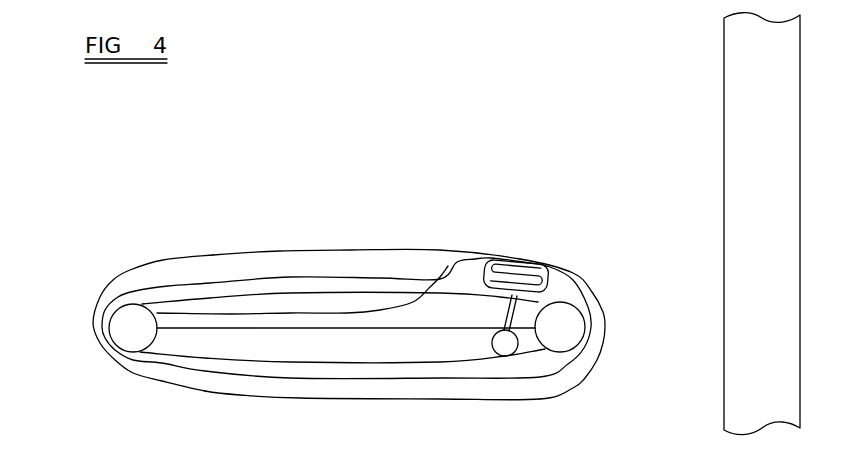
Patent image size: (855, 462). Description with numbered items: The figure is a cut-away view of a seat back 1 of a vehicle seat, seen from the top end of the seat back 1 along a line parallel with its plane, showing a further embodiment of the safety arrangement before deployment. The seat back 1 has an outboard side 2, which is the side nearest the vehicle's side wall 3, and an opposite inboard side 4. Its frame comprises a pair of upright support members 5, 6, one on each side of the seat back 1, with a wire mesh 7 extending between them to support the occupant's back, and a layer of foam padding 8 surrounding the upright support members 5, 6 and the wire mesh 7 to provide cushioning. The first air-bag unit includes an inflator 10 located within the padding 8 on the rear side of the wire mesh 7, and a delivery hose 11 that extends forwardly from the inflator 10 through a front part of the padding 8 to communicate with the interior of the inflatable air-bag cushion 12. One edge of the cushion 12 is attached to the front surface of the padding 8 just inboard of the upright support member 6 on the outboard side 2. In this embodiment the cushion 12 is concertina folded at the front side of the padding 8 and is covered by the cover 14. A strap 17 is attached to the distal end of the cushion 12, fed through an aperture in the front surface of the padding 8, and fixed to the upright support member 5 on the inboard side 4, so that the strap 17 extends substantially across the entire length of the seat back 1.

The seat back 1 is at (331, 304).
The outboard side 2 is at (600, 364).
The side wall 3 is at (724, 196).
The inboard side 4 is at (110, 281).
The upright support member 5 is at (133, 333).
The upright support member 6 is at (558, 340).
The wire mesh 7 is at (337, 329).
The padding 8 is at (268, 371).
The inflator 10 is at (502, 343).
The delivery hose 11 is at (505, 312).
The air-bag cushion 12 is at (527, 260).
The cover 14 is at (298, 251).
The strap 17 is at (448, 262).